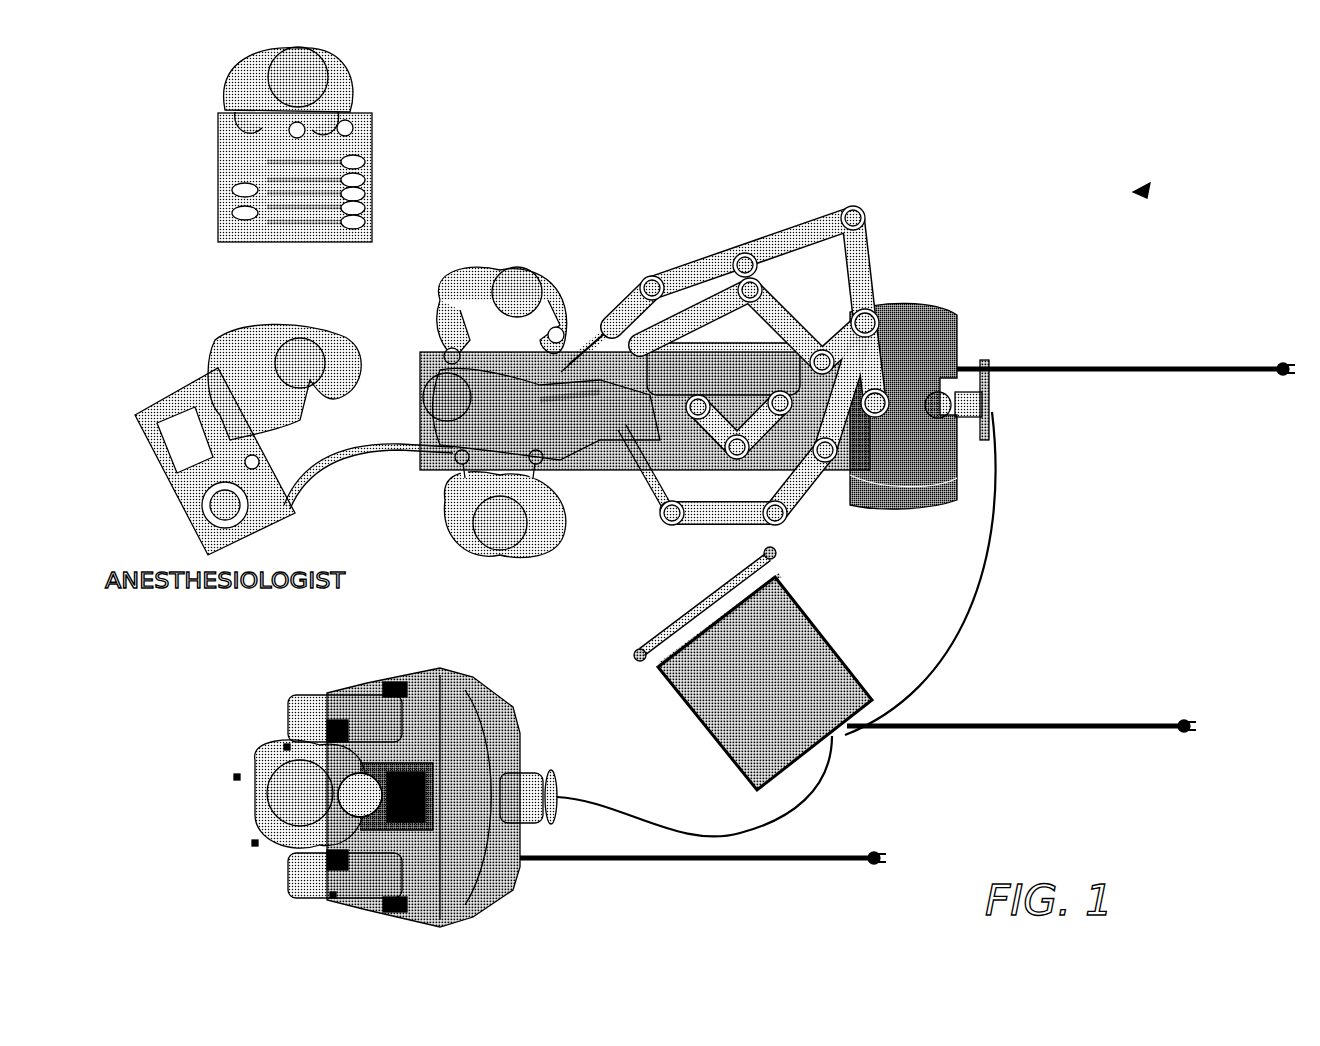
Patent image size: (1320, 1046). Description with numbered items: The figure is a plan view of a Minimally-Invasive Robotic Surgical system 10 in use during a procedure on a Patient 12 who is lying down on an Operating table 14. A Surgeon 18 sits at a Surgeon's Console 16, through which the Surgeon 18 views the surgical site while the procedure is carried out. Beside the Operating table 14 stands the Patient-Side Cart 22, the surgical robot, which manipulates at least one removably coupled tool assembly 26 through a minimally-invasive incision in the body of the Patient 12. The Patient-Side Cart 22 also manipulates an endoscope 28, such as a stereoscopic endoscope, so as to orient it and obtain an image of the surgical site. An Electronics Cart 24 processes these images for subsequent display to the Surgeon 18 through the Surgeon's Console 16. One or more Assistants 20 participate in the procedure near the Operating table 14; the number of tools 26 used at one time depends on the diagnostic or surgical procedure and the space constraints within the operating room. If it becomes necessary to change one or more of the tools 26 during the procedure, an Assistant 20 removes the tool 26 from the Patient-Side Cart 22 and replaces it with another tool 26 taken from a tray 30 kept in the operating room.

The Minimally-Invasive Robotic Surgical (MIRS) system 10 is at (1145, 188).
The Patient 12 is at (438, 392).
The Operating table 14 is at (703, 350).
The Surgeon's Console 16 is at (497, 897).
The Surgeon 18 is at (297, 800).
The Assistant 20 is at (480, 280).
The Patient-Side Cart 22 is at (912, 311).
The Electronics Cart 24 is at (823, 627).
The tool assembly 26 is at (240, 187).
The endoscope 28 is at (553, 437).
The tray 30 is at (373, 113).